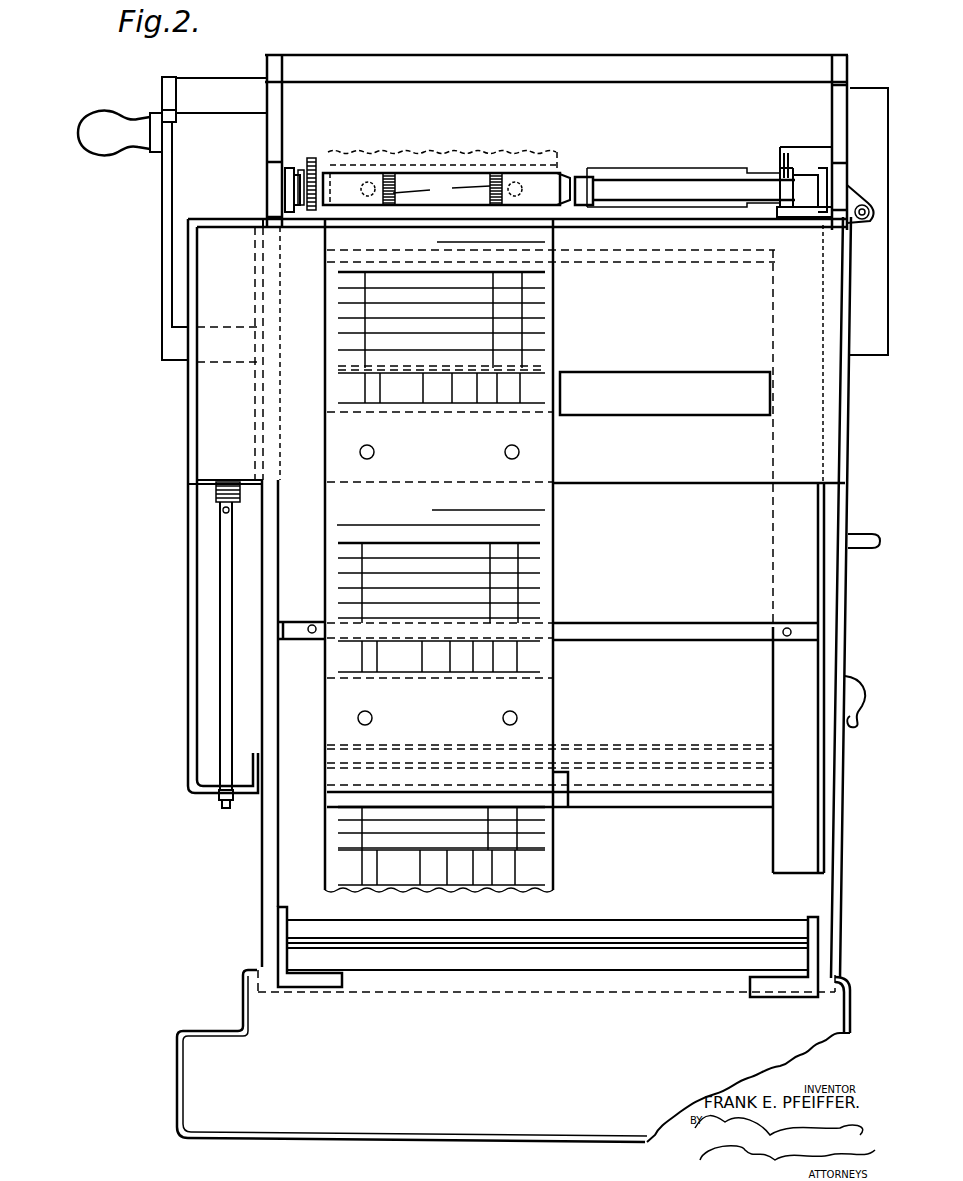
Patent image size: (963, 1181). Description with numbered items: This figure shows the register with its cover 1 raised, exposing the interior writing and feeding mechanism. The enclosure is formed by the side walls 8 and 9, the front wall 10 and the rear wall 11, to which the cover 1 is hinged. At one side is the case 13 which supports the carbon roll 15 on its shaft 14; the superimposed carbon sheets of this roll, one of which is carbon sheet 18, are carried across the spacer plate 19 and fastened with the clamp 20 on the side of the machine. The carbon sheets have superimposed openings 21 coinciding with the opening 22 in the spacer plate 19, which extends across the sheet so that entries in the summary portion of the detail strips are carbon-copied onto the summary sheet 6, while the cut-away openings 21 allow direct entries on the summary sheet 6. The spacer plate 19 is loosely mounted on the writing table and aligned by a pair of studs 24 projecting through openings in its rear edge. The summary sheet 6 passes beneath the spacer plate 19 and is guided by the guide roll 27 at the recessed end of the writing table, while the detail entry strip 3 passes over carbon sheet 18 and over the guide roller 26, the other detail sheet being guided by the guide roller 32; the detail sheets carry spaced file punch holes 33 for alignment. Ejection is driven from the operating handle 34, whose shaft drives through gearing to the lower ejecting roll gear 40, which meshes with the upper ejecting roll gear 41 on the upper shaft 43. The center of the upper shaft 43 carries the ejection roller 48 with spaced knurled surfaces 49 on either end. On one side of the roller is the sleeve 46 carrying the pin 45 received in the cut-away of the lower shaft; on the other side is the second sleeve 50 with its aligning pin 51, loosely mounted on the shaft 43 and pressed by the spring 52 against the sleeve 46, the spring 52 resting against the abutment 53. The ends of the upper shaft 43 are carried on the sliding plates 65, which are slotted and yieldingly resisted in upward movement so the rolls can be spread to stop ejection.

The cover 1 is at (200, 1073).
The detail entry strip 3 is at (553, 583).
The summary sheet 6 is at (645, 706).
The side wall 8 is at (270, 64).
The side wall 9 is at (841, 57).
The front wall 10 is at (625, 76).
The rear wall 11 is at (424, 997).
The case 13 is at (188, 587).
The shaft 14 is at (220, 619).
The carbon roll 15 is at (215, 403).
The carbon sheet 18 is at (604, 480).
The spacer plate 19 is at (628, 572).
The clamp 20 is at (848, 450).
The opening 21 is at (638, 418).
The opening 22 is at (668, 380).
The stud 24 is at (312, 625).
The guide roller 26 is at (678, 808).
The guide roll 27 is at (755, 763).
The guide roller 32 is at (760, 779).
The file punch hole 33 is at (505, 452).
The operating handle 34 is at (163, 208).
The lower ejecting roll gear 40 is at (312, 158).
The upper ejecting roll gear 41 is at (310, 205).
The upper shaft 43 is at (655, 184).
The pin 45 is at (373, 180).
The sleeve 46 is at (349, 175).
The ejection roller 48 is at (435, 176).
The knurled surface 49 is at (441, 188).
The second sleeve 50 is at (546, 176).
The aligning pin 51 is at (519, 180).
The spring 52 is at (577, 180).
The abutment 53 is at (590, 180).
The sliding plate 65 is at (822, 190).